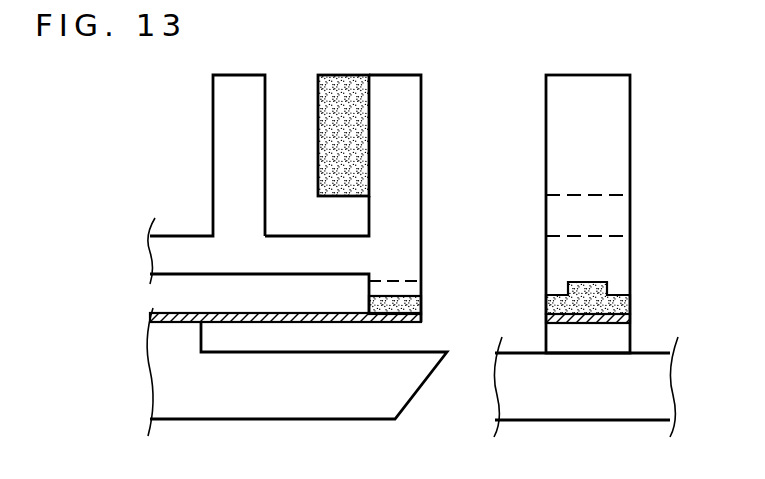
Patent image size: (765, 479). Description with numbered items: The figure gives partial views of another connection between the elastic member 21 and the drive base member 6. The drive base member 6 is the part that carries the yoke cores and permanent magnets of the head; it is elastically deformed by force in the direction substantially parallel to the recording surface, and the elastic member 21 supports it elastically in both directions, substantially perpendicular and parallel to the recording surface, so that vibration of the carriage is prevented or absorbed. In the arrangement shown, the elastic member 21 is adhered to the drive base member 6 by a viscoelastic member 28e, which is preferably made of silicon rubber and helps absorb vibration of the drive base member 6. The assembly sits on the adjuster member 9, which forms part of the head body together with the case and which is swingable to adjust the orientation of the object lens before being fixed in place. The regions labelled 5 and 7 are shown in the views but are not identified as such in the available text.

The insulating filler / interlayer insulator 5 is at (331, 117).
The drive base member 6 is at (419, 109).
The electrode portion 7 is at (219, 112).
The adjuster member 9 is at (342, 400).
The elastic member 21 is at (270, 315).
The viscoelastic member 28e is at (422, 303).